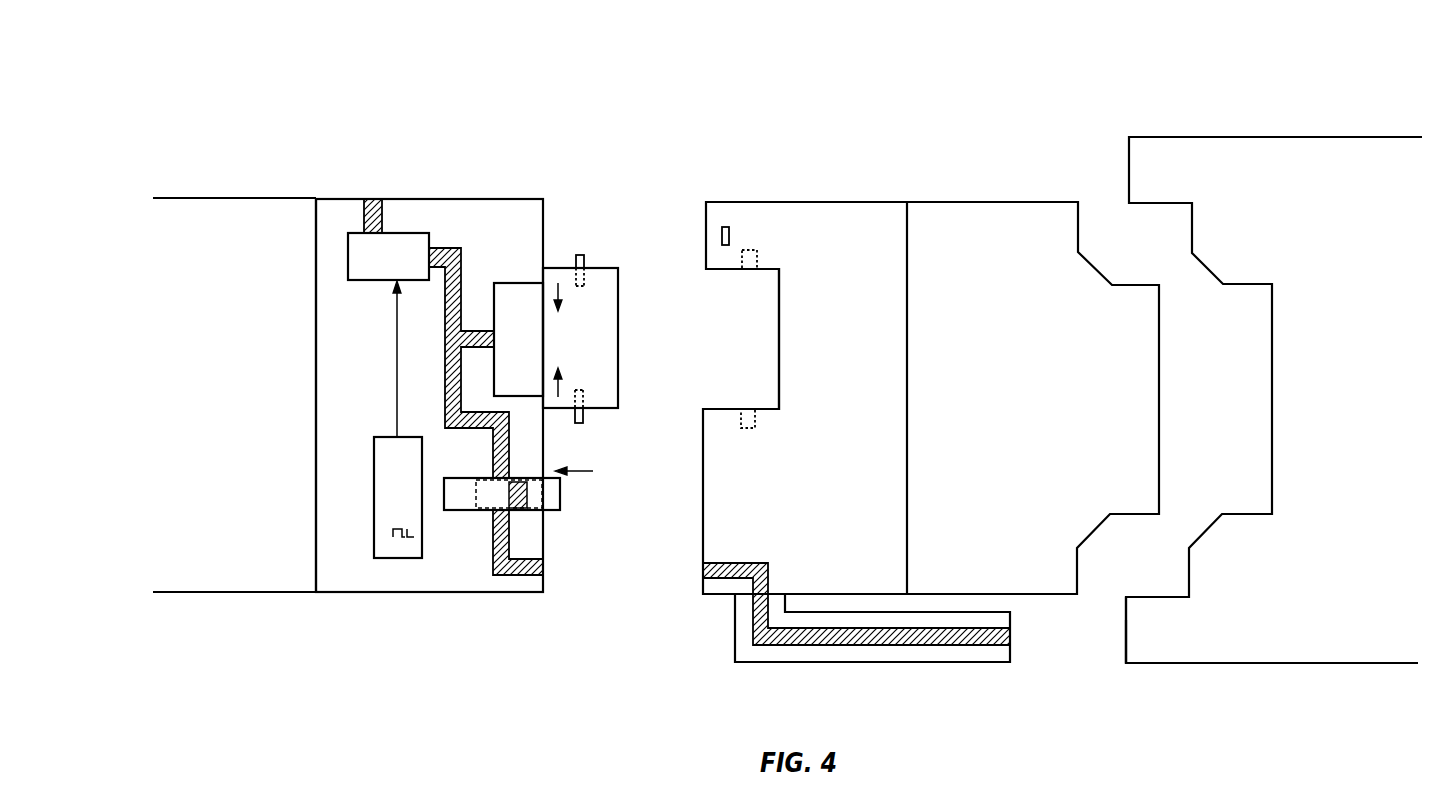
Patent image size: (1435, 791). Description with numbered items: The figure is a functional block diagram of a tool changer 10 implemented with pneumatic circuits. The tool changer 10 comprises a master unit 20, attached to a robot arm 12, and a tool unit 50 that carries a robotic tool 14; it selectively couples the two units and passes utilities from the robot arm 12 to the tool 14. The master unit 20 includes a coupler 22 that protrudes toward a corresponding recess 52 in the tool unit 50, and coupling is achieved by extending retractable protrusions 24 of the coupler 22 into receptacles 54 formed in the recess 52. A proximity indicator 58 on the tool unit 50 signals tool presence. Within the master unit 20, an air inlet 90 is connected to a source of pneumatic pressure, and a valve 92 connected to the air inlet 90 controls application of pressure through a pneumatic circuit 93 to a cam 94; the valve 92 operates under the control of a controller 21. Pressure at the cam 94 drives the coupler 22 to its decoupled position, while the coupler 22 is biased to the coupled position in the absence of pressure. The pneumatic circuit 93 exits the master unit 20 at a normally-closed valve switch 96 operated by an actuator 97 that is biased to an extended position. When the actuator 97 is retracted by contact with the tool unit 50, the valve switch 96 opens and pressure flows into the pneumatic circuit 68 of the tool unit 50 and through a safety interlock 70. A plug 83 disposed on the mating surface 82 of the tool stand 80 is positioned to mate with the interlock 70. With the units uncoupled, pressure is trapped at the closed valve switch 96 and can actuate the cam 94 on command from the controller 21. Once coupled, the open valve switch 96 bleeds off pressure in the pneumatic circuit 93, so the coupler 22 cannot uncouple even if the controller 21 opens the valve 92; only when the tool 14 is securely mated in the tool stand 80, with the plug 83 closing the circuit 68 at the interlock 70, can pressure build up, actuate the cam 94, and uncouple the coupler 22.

The tool changer 10 is at (855, 100).
The robot arm 12 is at (300, 198).
The robotic tool 14 is at (1008, 202).
The master unit 20 is at (520, 199).
The controller 21 is at (383, 436).
The coupler 22 is at (603, 268).
The retractable protrusions 24 is at (585, 395).
The tool unit 50 is at (733, 202).
The recess 52 is at (721, 346).
The receptacles 54 is at (752, 428).
The proximity indicator 58 is at (731, 234).
The pneumatic circuit 68 is at (752, 563).
The safety interlock 70 is at (985, 662).
The tool stand 80 is at (1352, 137).
The mating surface 82 is at (1126, 648).
The plug 83 is at (1125, 631).
The air inlet 90 is at (364, 216).
The valve 92 is at (400, 233).
The pneumatic circuit 93 is at (471, 330).
The cam 94 is at (522, 282).
The valve switch 96 is at (450, 510).
The actuator 97 is at (552, 510).